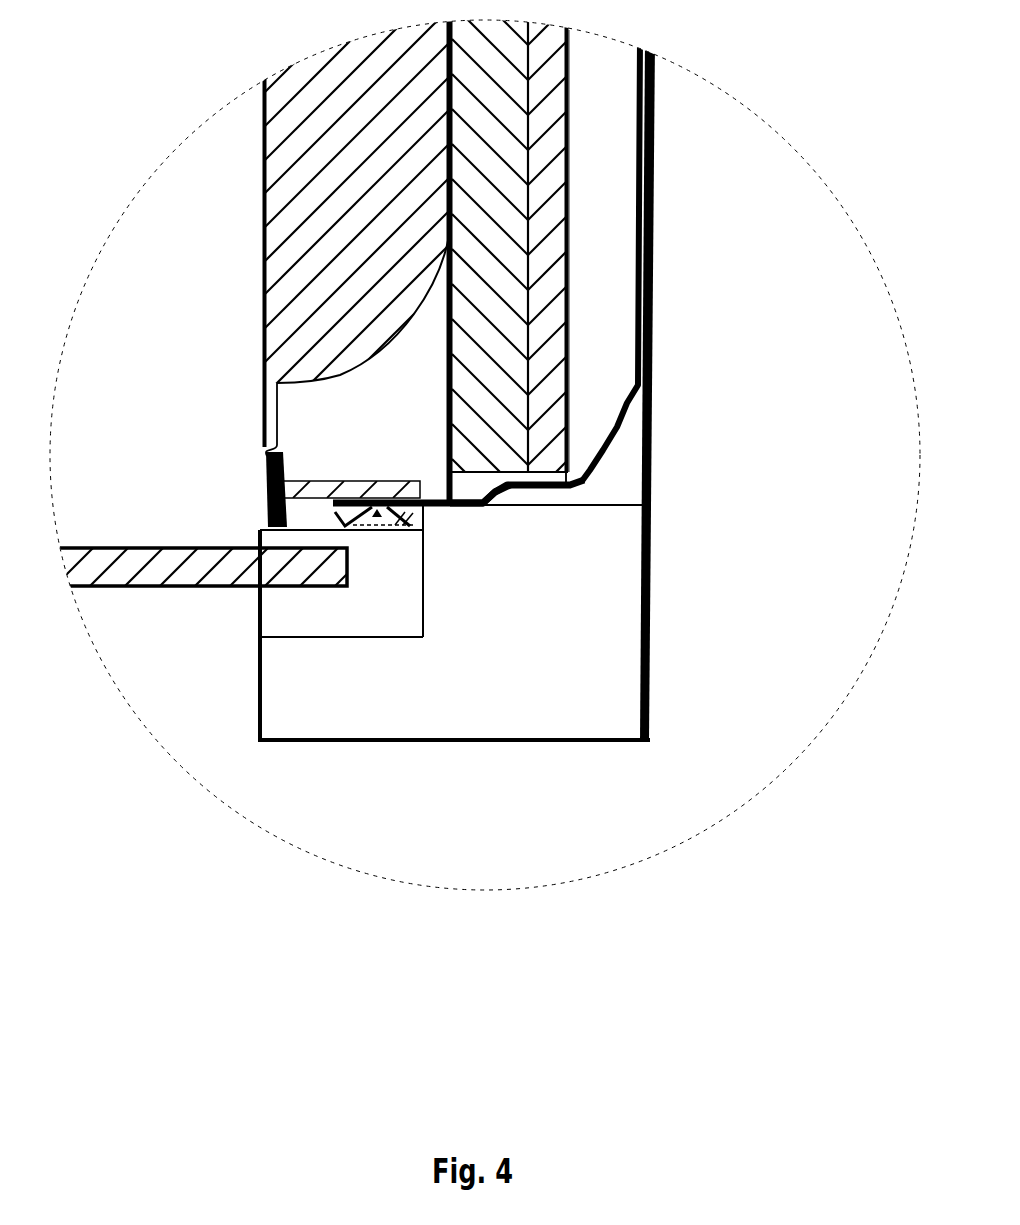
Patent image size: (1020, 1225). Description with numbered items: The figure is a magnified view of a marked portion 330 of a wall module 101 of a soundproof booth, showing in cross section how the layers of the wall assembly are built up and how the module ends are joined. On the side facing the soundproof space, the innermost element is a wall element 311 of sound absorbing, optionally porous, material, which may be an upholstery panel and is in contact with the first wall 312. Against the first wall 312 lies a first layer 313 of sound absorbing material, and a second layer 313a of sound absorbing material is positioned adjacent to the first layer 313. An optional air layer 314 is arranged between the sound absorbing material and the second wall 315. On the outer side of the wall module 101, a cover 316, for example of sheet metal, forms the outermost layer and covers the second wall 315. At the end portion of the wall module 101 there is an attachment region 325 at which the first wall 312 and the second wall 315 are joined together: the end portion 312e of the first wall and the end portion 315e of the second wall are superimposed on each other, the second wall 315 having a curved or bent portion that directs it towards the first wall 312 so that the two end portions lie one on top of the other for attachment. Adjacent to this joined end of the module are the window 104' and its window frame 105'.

The marked portion 330 is at (112, 229).
The wall element of sound absorbing material 311 is at (276, 277).
The first wall 312 is at (447, 413).
The end portion of the first wall 312e is at (435, 480).
The sound absorbing material layer 313 is at (455, 302).
The sound absorbing material layer 313a is at (553, 137).
The air layer 314 is at (597, 280).
The wall module 101 is at (662, 263).
The cover 316 is at (648, 435).
The second wall 315 is at (595, 473).
The end portion of the second wall 315e is at (498, 493).
The attachment region 325 is at (382, 532).
The window frame 105' is at (454, 680).
The window 104' is at (206, 634).